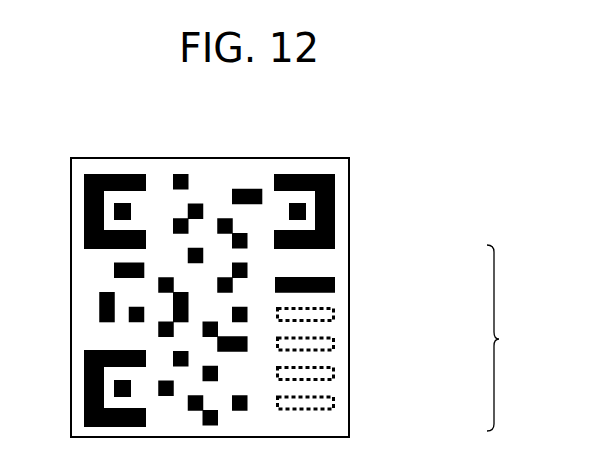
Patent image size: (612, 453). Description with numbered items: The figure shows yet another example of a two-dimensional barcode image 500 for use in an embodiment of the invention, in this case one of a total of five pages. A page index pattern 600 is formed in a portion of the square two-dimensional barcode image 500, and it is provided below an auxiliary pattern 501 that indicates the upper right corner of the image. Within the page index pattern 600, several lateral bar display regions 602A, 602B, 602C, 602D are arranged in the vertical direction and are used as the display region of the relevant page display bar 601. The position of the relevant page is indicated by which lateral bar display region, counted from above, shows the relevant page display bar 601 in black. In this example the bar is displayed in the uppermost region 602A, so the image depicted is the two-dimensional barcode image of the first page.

The two-dimensional barcode image 500 is at (223, 166).
The auxiliary pattern 501 is at (334, 207).
The page index pattern 600 is at (516, 338).
The relevant page display bar 601 is at (334, 279).
The lateral bar display region 602A is at (334, 281).
The lateral bar display region 602B is at (334, 307).
The lateral bar display region 602C is at (334, 338).
The lateral bar display region 602D is at (334, 368).